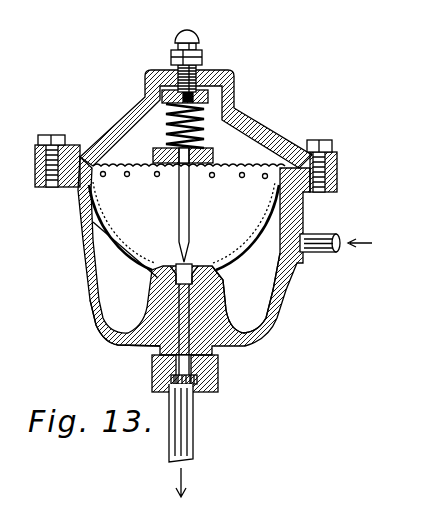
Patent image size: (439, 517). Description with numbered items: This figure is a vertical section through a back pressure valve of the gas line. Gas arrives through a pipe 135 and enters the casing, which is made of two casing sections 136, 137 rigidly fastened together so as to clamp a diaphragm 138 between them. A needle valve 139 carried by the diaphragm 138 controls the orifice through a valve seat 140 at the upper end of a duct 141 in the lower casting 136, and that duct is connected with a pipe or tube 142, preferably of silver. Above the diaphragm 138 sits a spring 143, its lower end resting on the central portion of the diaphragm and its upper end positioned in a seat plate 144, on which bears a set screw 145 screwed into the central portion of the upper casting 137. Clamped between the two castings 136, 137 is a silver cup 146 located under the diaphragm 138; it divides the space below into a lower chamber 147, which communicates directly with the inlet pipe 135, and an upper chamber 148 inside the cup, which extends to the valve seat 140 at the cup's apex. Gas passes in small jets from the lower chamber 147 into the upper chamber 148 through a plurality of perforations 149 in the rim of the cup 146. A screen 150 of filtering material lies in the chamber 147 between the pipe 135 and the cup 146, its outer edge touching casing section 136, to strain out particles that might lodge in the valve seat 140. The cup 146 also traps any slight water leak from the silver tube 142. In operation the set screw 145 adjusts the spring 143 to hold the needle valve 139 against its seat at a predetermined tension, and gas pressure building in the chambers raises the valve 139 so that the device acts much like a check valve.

The pipe 135 is at (316, 253).
The casing section 136 is at (110, 342).
The casing section 137 is at (190, 119).
The diaphragm 138 is at (268, 157).
The needle valve 139 is at (189, 228).
The valve seat 140 is at (187, 258).
The duct 141 is at (183, 351).
The pipe or tube 142 is at (183, 437).
The spring 143 is at (203, 120).
The seat plate 144 is at (205, 97).
The set screw 145 is at (199, 43).
The silver cup 146 is at (305, 207).
The lower chamber 147 is at (252, 290).
The upper chamber 148 is at (189, 180).
The perforations 149 is at (118, 175).
The screen 150 is at (132, 265).